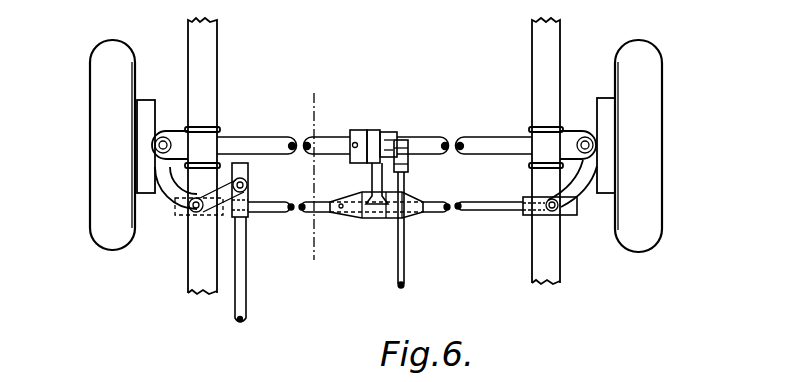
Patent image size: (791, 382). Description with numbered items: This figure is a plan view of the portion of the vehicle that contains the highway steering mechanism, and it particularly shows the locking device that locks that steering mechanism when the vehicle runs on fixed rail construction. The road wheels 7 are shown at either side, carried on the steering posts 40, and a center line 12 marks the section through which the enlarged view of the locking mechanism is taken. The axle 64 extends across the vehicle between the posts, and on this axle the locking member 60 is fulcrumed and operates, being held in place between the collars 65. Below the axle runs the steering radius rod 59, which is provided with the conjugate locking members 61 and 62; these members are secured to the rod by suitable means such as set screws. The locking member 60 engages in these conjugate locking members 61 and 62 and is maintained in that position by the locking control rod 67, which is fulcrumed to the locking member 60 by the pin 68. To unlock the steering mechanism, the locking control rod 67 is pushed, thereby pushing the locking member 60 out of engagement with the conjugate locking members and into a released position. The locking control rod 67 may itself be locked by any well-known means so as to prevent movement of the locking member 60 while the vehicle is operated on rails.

The wheel 7 is at (100, 215).
The steering post 40 is at (203, 268).
The center line 12 is at (322, 93).
The steering radius rod 59 is at (435, 209).
The locking member 60 is at (377, 220).
The conjugate locking member 61 is at (414, 215).
The conjugate locking member 62 is at (346, 216).
The axle 64 is at (430, 137).
The collars 65 is at (355, 130).
The locking control rod 67 is at (401, 288).
The pin 68 is at (382, 130).